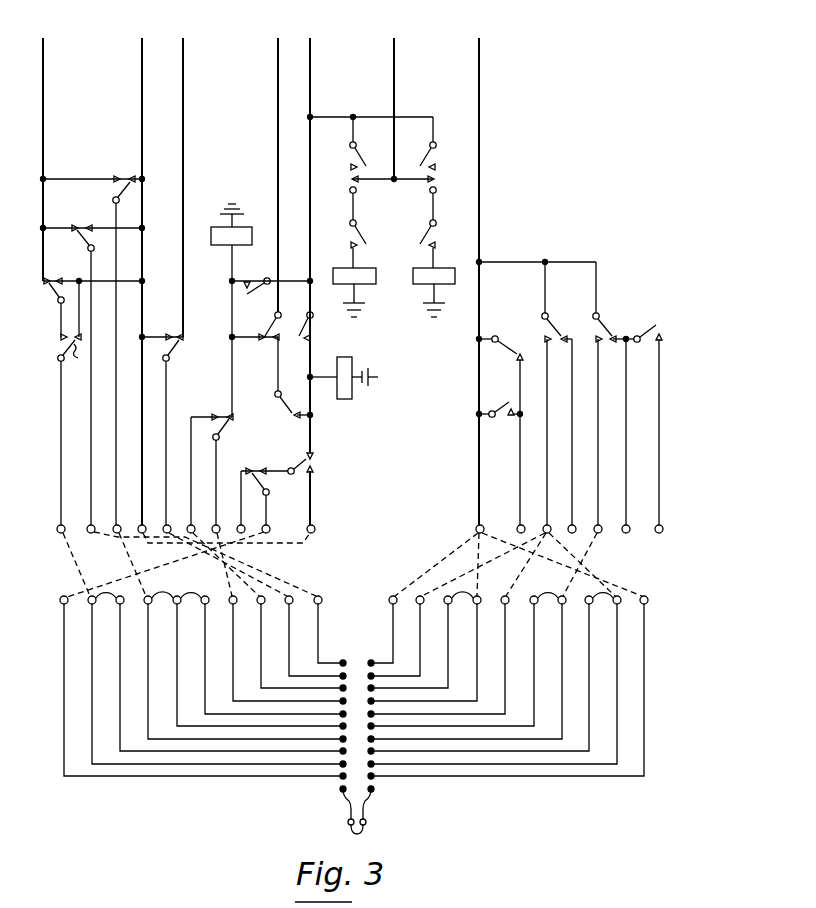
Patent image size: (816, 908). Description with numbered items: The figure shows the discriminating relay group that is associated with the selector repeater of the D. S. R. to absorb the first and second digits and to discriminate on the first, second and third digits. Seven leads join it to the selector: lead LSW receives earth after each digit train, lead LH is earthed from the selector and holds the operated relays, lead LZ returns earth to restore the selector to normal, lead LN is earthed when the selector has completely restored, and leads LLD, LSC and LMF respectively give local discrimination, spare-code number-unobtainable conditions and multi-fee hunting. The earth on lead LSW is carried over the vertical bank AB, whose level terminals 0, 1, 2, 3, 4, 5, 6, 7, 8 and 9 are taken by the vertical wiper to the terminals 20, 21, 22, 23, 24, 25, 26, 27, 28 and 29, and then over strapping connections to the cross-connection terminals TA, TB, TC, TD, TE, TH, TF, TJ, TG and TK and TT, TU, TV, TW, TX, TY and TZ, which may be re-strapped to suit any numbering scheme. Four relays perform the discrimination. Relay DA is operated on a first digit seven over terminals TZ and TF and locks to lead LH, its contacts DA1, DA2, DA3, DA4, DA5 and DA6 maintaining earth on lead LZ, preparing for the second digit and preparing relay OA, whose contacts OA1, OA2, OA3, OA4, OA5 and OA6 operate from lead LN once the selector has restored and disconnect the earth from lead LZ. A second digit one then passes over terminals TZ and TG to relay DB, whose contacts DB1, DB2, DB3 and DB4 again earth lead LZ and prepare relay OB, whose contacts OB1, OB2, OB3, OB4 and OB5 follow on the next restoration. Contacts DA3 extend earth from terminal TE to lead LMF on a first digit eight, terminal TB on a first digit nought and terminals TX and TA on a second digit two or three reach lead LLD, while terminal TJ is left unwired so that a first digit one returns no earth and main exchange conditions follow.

The lead LLD is at (60, 159).
The lead LSC is at (159, 281).
The lead LMF is at (201, 187).
The lead LZ is at (289, 175).
The lead LH is at (322, 281).
The lead LN is at (406, 108).
The lead LSW is at (499, 281).
The contacts of relay DB DB4 is at (357, 417).
The contacts of relay DA DA5 is at (93, 367).
The contacts of relay DB DB2 is at (94, 299).
The contacts of relay DA DA6 is at (206, 233).
The contacts DA3 is at (162, 420).
The contacts of relay DA DA1 is at (271, 277).
The contacts of relay OA OA5 is at (256, 351).
The contacts of relay OB OB2 is at (285, 406).
The contacts of relay DB DB1 is at (321, 326).
The contacts of relay OA OA3 is at (213, 459).
The contacts of relay DA DA2 is at (264, 489).
The contacts of relay OB OB3 is at (318, 463).
The contacts of relay OA OA6 is at (398, 275).
The contacts of relay DA DA4 is at (342, 234).
The contacts of relay OB OB5 is at (478, 275).
The contacts of relay DB DB3 is at (444, 234).
The contacts of relay OA OA2 is at (537, 393).
The contacts of relay OB OB4 is at (613, 393).
The contacts of relay OA OA1 is at (648, 416).
The contacts of relay OA OA4 is at (500, 430).
The contacts of relay OB OB1 is at (500, 401).
The cross-connection terminal TA is at (51, 519).
The cross-connection terminal TB is at (82, 519).
The cross-connection terminal TC is at (107, 519).
The cross-connection terminal TD is at (132, 519).
The cross-connection terminal TE is at (157, 519).
The cross-connection terminal TH is at (182, 519).
The cross-connection terminal TF is at (207, 519).
The cross-connection terminal TJ is at (233, 519).
The cross-connection terminal TG is at (257, 519).
The cross-connection terminal TK is at (302, 519).
The cross-connection terminal TZ is at (470, 519).
The cross-connection terminal TY is at (512, 519).
The cross-connection terminal TX is at (537, 519).
The cross-connection terminal TW is at (563, 519).
The cross-connection terminal TV is at (589, 519).
The cross-connection terminal TU is at (617, 519).
The cross-connection terminal TT is at (650, 519).
The vertical bank terminal 0 is at (385, 629).
The vertical bank terminal 1 is at (511, 686).
The vertical bank terminal 2 is at (497, 680).
The vertical bank terminal 3 is at (483, 673).
The vertical bank terminal 4 is at (470, 667).
The vertical bank terminal 5 is at (456, 661).
The vertical bank terminal 6 is at (441, 655).
The vertical bank terminal 7 is at (427, 648).
The vertical bank terminal 8 is at (413, 642).
The vertical bank terminal 9 is at (399, 636).
The terminal 20 is at (319, 629).
The terminal 21 is at (192, 686).
The terminal 22 is at (206, 680).
The terminal 23 is at (220, 673).
The terminal 24 is at (234, 667).
The terminal 25 is at (248, 661).
The terminal 26 is at (263, 655).
The terminal 27 is at (277, 648).
The terminal 28 is at (291, 642).
The terminal 29 is at (305, 636).
The connector AB is at (357, 737).